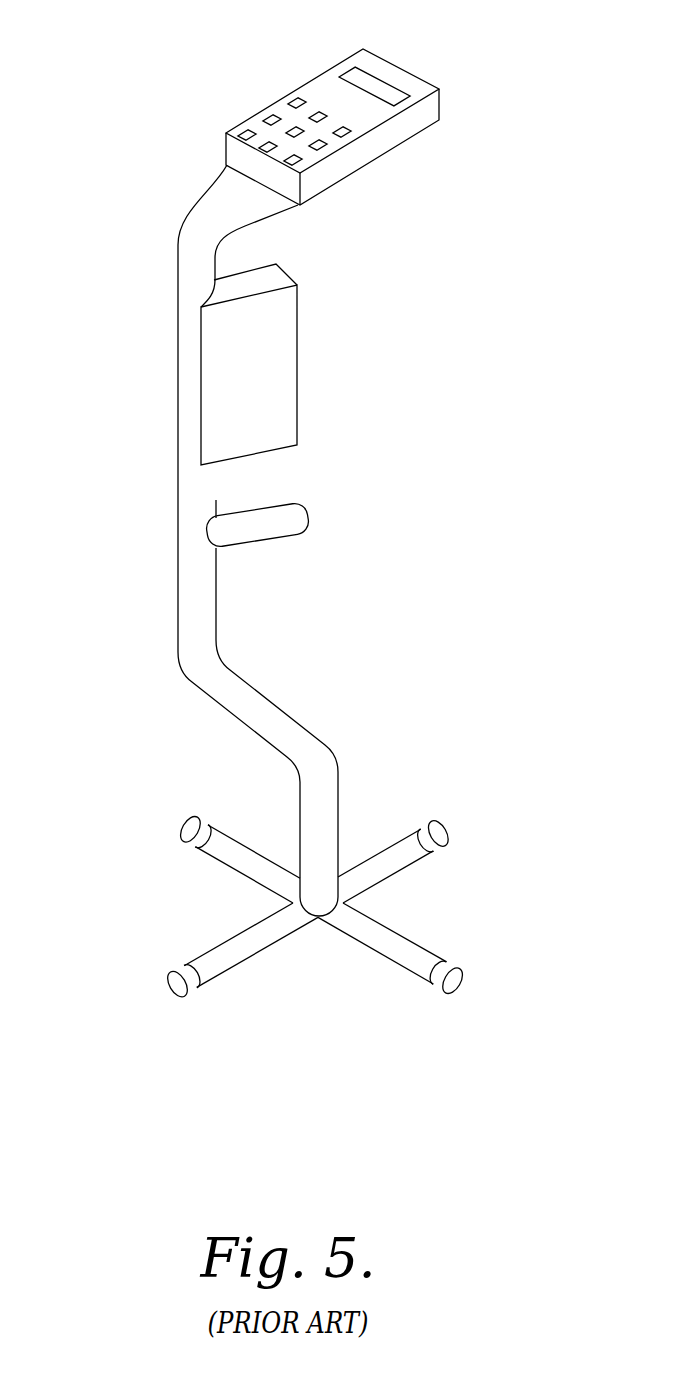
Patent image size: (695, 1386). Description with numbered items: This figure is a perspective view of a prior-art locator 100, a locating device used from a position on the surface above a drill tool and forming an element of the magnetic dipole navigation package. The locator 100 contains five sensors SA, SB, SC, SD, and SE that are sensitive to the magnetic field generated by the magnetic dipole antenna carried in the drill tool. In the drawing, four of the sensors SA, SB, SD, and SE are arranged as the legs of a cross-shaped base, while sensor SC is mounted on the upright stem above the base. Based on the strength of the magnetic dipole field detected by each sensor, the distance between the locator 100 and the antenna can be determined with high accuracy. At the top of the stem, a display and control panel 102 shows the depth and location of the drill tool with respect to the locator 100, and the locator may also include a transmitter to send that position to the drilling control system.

The locator 100 is at (432, 307).
The display and control panel 102 is at (313, 87).
The sensor SC is at (310, 510).
The sensor SA is at (170, 978).
The sensor SB is at (447, 820).
The sensor SD is at (185, 820).
The sensor SE is at (450, 967).